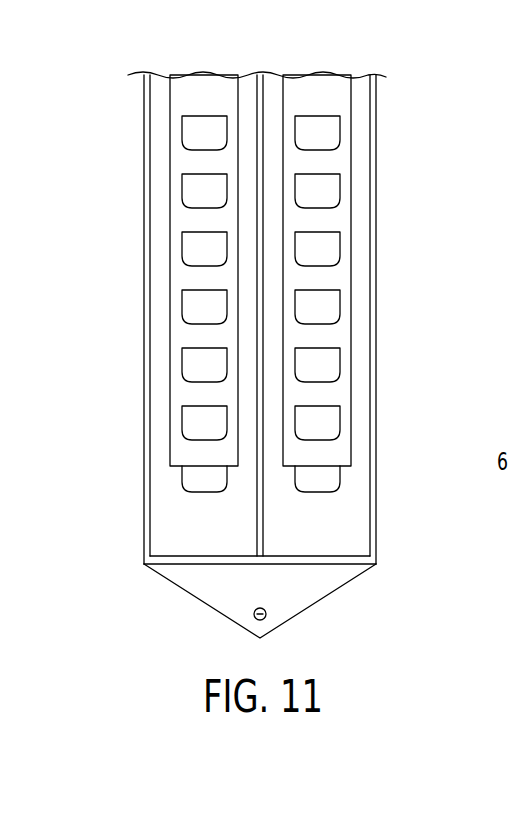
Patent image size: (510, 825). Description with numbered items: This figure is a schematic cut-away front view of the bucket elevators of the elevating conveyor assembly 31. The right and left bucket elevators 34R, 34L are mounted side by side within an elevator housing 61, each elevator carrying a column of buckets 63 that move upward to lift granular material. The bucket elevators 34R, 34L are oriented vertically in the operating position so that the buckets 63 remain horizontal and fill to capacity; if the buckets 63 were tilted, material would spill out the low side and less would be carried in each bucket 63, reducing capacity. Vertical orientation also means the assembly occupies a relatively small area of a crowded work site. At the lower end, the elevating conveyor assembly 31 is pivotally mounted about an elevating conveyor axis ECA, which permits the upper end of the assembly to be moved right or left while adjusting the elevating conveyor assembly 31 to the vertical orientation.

The elevating conveyor assembly 31 is at (133, 233).
The elevator housing 61 is at (378, 238).
The buckets 63 is at (338, 302).
The left bucket elevator 34L is at (160, 433).
The right bucket elevator 34R is at (363, 283).
The elevating conveyor axis ECA is at (266, 612).